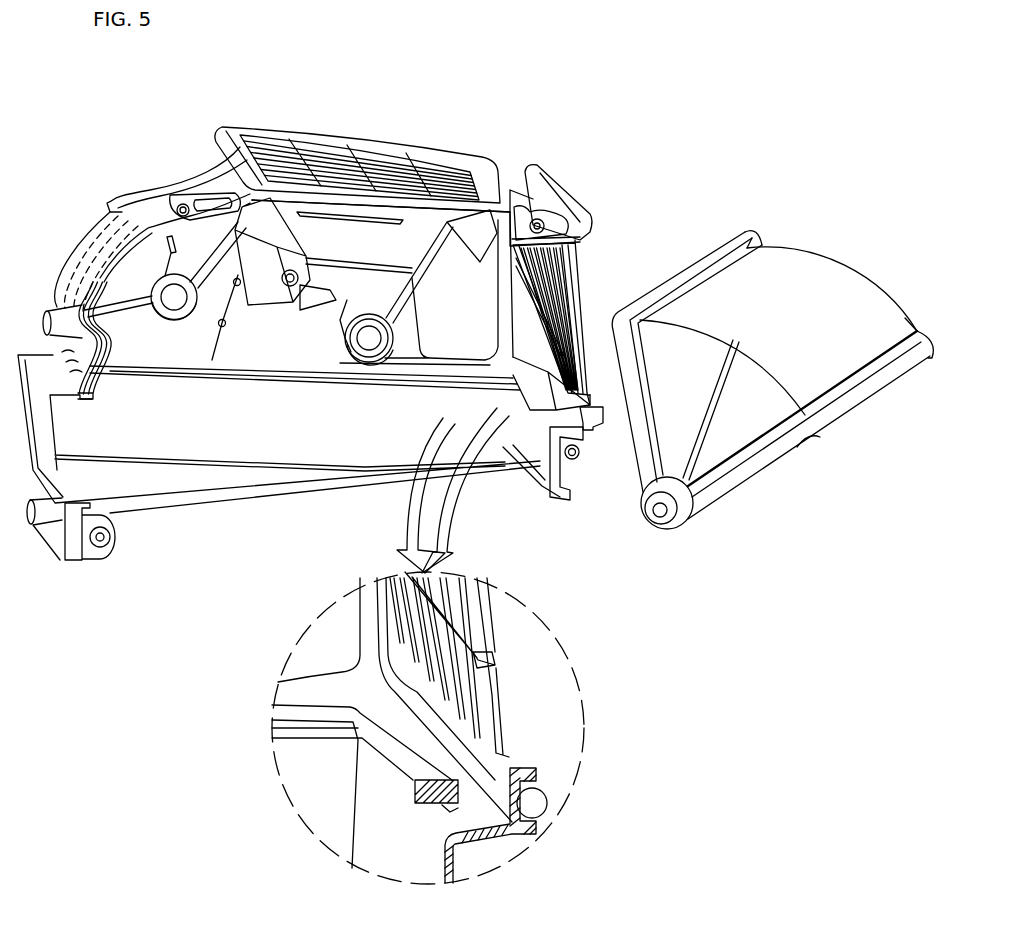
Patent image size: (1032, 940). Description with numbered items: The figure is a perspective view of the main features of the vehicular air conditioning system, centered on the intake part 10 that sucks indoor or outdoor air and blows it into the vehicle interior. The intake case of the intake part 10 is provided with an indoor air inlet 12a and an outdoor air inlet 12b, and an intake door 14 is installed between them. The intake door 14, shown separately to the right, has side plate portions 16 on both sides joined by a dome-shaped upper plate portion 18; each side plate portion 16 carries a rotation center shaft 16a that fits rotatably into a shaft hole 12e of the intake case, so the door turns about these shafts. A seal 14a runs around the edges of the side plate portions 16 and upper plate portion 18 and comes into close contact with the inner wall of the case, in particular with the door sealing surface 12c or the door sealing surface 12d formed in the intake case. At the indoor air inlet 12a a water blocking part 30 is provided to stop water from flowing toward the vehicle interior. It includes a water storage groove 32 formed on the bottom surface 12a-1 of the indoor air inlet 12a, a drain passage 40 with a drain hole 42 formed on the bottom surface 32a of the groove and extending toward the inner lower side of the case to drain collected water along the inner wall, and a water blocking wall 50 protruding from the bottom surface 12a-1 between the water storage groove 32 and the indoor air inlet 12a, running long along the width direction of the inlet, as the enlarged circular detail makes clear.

The intake part 10 is at (248, 108).
The indoor air inlet 12a is at (518, 296).
The bottom surface 12a-1 is at (528, 380).
The outdoor air inlet 12b is at (355, 228).
The door sealing surface 12c is at (338, 286).
The door sealing surface 12d is at (366, 345).
The shaft hole 12e is at (362, 353).
The intake door 14 is at (787, 232).
The seal 14a is at (697, 266).
The side plate portion 16 is at (737, 432).
The rotation center shaft 16a is at (671, 520).
The upper plate portion 18 is at (862, 288).
The water blocking part 30 is at (572, 462).
The water storage groove 32 is at (546, 645).
The bottom surface 32a is at (549, 801).
The drain passage 40 is at (548, 493).
The drain hole 42 is at (416, 656).
The water blocking wall 50 is at (496, 756).